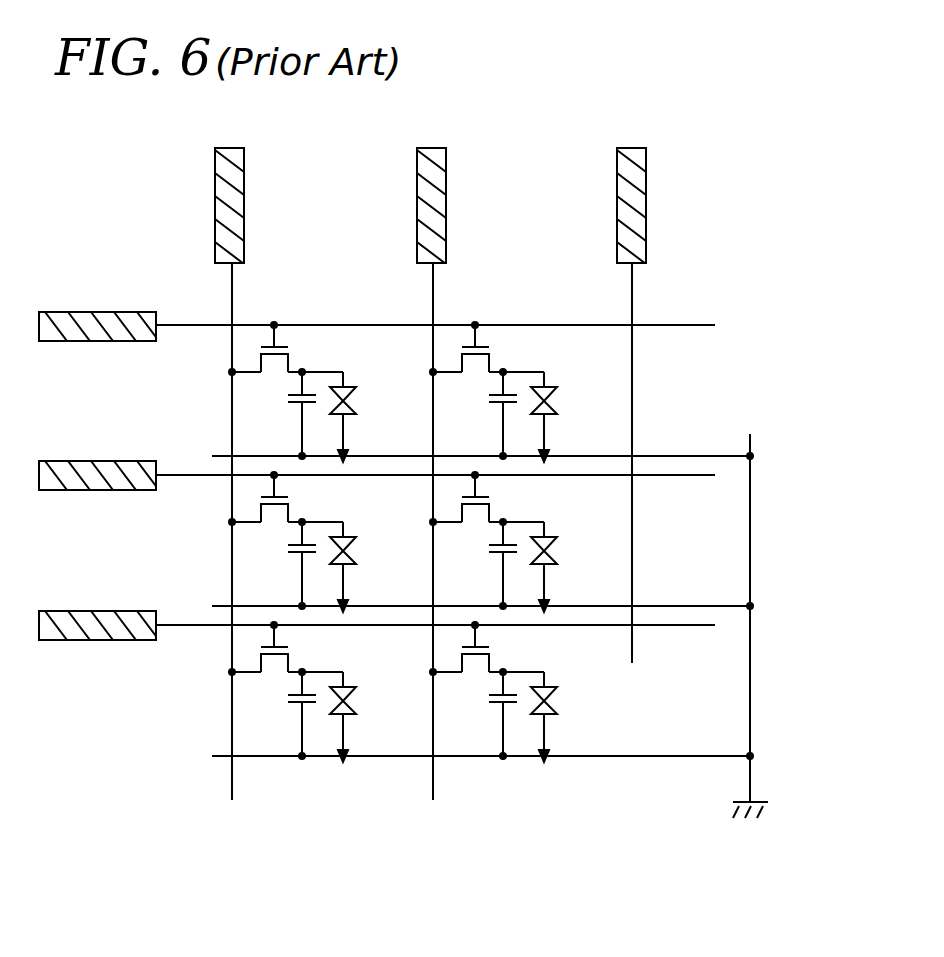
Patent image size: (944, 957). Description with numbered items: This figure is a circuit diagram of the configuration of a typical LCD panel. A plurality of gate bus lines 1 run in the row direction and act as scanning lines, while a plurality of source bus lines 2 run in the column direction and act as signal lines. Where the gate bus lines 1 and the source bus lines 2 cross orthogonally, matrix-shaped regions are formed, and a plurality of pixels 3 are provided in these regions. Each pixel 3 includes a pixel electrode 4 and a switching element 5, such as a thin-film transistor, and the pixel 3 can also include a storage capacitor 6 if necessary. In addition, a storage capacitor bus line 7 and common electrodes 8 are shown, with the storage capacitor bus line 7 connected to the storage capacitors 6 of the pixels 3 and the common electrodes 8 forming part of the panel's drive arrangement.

The gate bus line 1 is at (698, 323).
The source bus line 2 is at (633, 645).
The pixel 3 is at (390, 239).
The pixel electrode 4 is at (347, 385).
The switching element 5 is at (253, 350).
The storage capacitor 6 is at (320, 400).
The storage capacitor bus line 7 is at (752, 688).
The common electrode 8 is at (338, 462).